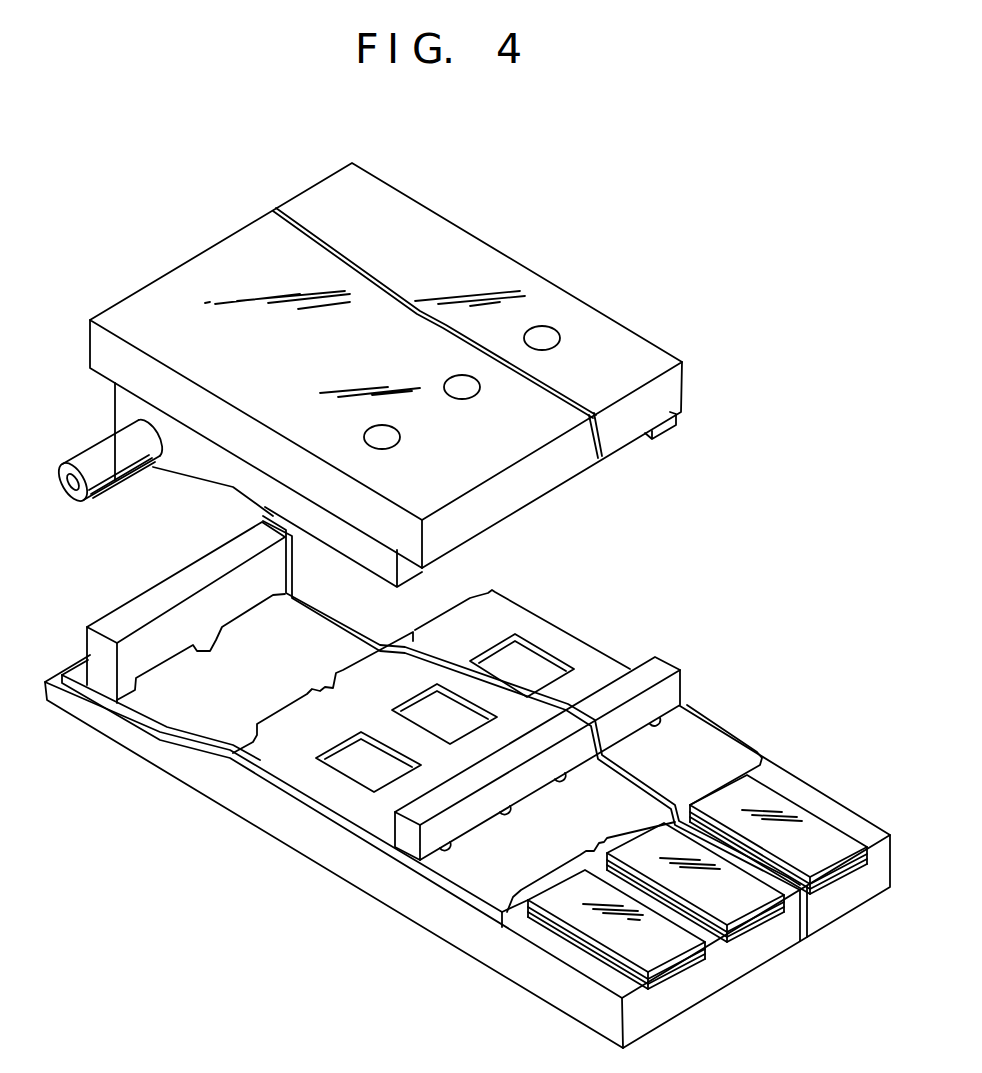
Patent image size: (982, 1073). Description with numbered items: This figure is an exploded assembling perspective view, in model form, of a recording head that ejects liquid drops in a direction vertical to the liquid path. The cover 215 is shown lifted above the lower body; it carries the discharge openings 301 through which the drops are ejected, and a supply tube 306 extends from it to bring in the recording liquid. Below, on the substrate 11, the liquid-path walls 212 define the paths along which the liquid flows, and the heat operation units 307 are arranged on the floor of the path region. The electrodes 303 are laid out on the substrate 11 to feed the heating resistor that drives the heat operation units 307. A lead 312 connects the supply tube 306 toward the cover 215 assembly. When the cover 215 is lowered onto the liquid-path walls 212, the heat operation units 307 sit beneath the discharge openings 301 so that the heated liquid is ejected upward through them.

The substrate 11 is at (278, 822).
The liquid-path walls 212 is at (657, 670).
The cover 215 is at (621, 342).
The discharge openings 301 is at (546, 328).
The electrodes 303 is at (763, 802).
The supply tube 306 is at (97, 451).
The heat operation units 307 is at (530, 662).
The lead wire 312 is at (176, 470).